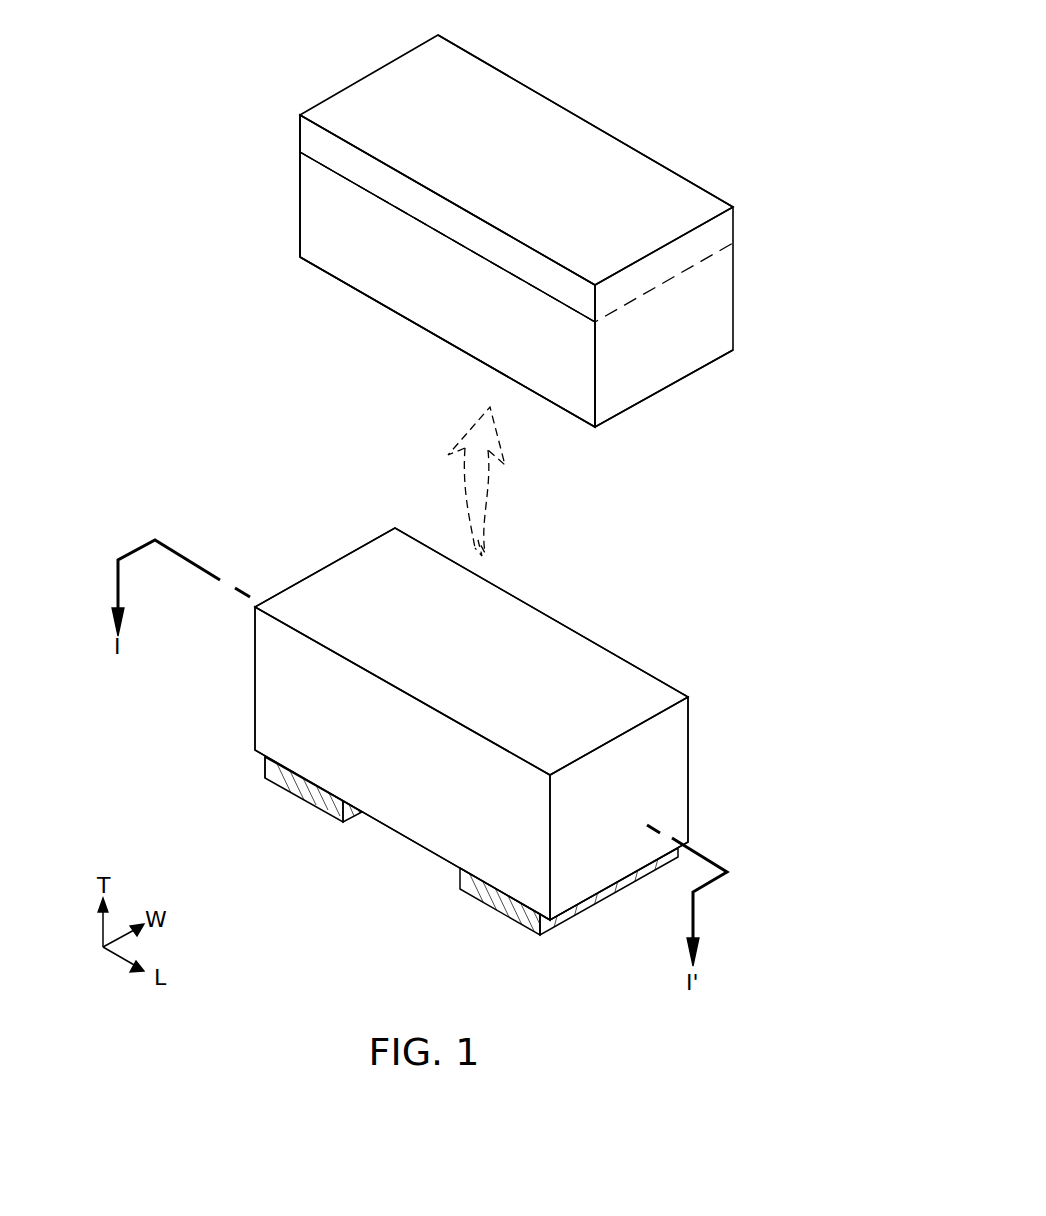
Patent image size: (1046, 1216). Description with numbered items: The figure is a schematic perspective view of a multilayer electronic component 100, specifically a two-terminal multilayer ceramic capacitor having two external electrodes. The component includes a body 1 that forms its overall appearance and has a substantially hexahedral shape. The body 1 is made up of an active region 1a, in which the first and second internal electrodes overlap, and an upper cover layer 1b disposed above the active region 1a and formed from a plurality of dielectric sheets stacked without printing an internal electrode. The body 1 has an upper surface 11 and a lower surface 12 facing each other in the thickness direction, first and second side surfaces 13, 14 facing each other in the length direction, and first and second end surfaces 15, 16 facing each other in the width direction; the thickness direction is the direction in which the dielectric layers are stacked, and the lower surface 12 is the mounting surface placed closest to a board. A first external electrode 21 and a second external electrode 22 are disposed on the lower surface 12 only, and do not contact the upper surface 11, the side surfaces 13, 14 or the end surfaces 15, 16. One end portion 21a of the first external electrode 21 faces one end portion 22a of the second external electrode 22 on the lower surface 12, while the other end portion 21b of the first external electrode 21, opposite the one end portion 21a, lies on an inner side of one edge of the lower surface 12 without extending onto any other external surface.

The multilayer electronic component 100 is at (350, 489).
The body 1 is at (607, 677).
The active region 1a is at (760, 252).
The upper cover layer 1b is at (733, 207).
The upper surface 11 is at (512, 118).
The lower surface 12 is at (638, 403).
The first side surface 13 is at (678, 330).
The second side surface 14 is at (300, 180).
The first end surface 15 is at (397, 268).
The second end surface 16 is at (618, 137).
The first external electrode 21 is at (313, 792).
The one end portion of the first external electrode 21a is at (357, 830).
The other end portion of the first external electrode 21b is at (262, 763).
The second external electrode 22 is at (497, 915).
The one end portion of the second external electrode 22a is at (460, 875).